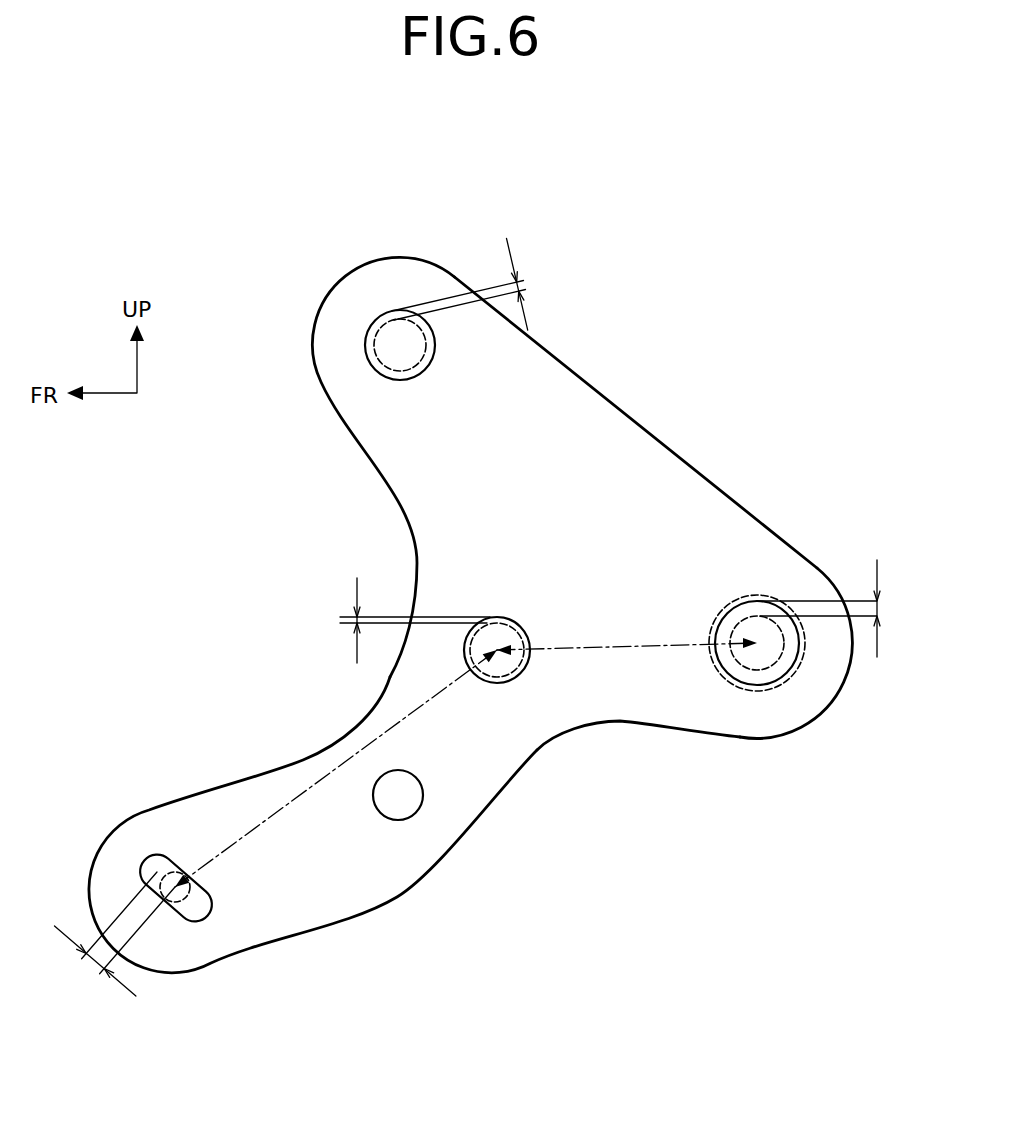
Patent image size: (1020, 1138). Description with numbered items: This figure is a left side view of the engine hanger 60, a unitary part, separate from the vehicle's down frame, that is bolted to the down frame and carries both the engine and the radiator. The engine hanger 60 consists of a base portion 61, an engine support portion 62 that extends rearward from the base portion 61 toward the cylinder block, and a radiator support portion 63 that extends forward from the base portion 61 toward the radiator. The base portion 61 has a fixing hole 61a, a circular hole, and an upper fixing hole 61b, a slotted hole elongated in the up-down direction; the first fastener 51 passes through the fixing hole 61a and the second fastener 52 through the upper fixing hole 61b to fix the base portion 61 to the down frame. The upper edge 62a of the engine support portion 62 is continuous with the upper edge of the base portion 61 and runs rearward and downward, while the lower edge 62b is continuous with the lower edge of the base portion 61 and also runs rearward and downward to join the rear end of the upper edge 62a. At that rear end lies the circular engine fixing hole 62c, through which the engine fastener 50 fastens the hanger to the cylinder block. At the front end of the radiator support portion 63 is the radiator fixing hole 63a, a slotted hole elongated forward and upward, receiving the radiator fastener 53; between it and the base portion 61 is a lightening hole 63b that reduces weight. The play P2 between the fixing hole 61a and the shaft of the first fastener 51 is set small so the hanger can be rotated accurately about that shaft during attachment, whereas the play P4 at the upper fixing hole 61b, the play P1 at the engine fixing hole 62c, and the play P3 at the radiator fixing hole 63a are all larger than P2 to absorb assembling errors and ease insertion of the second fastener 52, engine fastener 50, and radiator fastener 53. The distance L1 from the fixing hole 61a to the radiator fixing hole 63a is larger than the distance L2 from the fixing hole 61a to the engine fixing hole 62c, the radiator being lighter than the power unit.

The engine hanger 60 is at (686, 254).
The base portion 61 is at (398, 500).
The fixing hole 61a is at (512, 672).
The upper fixing hole 61b is at (392, 311).
The engine support portion 62 is at (790, 545).
The upper edge 62a is at (632, 415).
The lower edge 62b is at (691, 738).
The engine fixing hole 62c is at (793, 664).
The radiator support portion 63 is at (205, 788).
The radiator fixing hole 63a is at (193, 921).
The lightening hole 63b is at (405, 820).
The engine fastener 50 is at (757, 671).
The first fastener 51 is at (468, 652).
The second fastener 52 is at (376, 340).
The radiator fastener 53 is at (177, 903).
The distance L1 is at (323, 778).
The distance L2 is at (640, 645).
The play P1 is at (837, 608).
The play P2 is at (355, 616).
The play P3 is at (115, 934).
The play P4 is at (477, 284).